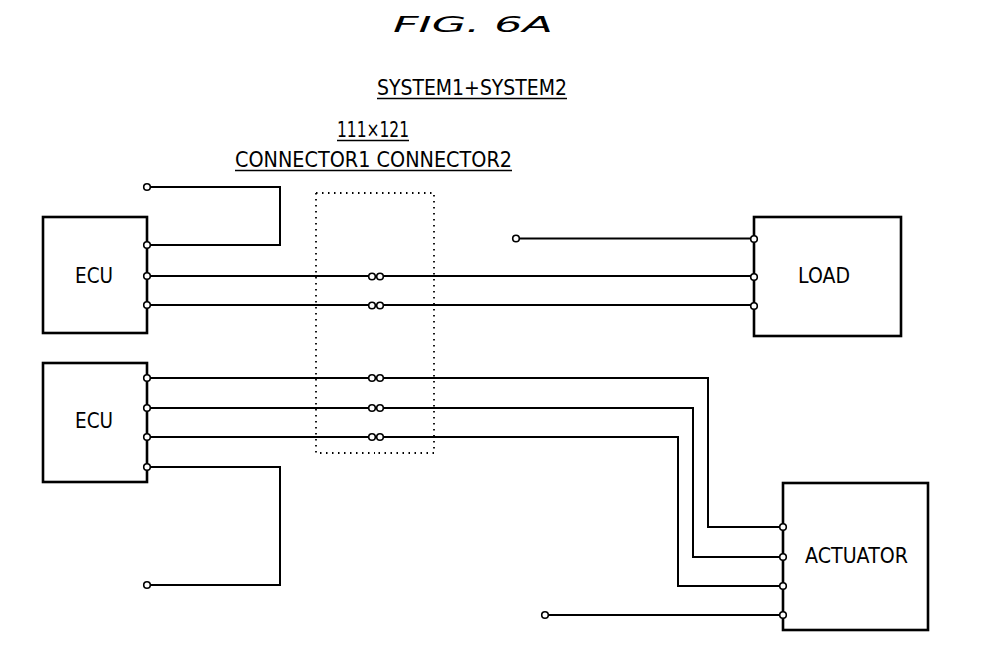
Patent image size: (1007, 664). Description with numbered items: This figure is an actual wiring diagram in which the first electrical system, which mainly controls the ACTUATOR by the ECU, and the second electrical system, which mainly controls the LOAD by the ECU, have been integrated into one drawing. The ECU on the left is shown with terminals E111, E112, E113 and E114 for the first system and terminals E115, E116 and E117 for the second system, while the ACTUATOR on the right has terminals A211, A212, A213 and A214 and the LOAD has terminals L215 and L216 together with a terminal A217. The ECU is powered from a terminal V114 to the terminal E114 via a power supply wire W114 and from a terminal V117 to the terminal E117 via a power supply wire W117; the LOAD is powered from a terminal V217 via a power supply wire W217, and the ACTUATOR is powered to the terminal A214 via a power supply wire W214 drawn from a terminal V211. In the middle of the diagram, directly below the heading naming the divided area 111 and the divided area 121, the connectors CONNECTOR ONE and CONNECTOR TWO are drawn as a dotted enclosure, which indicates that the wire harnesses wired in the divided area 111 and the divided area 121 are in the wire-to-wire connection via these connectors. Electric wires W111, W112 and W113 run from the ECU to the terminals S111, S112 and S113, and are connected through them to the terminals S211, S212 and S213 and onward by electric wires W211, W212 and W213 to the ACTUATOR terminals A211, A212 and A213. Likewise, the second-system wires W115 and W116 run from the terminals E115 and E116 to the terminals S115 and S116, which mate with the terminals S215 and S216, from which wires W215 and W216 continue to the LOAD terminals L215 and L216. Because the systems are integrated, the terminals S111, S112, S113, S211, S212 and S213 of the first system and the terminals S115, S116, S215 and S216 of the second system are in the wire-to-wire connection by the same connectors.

The divided area 111 is at (412, 453).
The divided area 121 is at (375, 323).
The terminal E111 is at (170, 367).
The terminal E112 is at (170, 397).
The terminal E113 is at (170, 426).
The terminal E114 is at (170, 456).
The terminal E115 is at (171, 295).
The terminal E116 is at (171, 265).
The terminal E117 is at (170, 235).
The electric wire W111 is at (259, 365).
The electric wire W112 is at (259, 395).
The electric wire W113 is at (259, 425).
The power supply wire W114 is at (240, 526).
The wire W115 is at (259, 294).
The wire W116 is at (259, 264).
The power supply wire W117 is at (213, 216).
The terminal S111 is at (348, 367).
The terminal S112 is at (348, 397).
The terminal S113 is at (348, 426).
The terminal S115 is at (348, 295).
The terminal S116 is at (348, 266).
The terminal S211 is at (402, 367).
The terminal S212 is at (402, 397).
The terminal S213 is at (402, 426).
The terminal S215 is at (402, 295).
The terminal S216 is at (402, 266).
The electric wire W211 is at (581, 440).
The electric wire W212 is at (581, 470).
The electric wire W213 is at (581, 499).
The power supply wire W214 is at (664, 602).
The wire W215 is at (567, 294).
The wire W216 is at (567, 264).
The power supply wire W217 is at (635, 226).
The terminal A211 is at (759, 516).
The terminal A212 is at (759, 546).
The terminal A213 is at (759, 575).
The terminal A214 is at (759, 604).
The load terminal A217 is at (727, 227).
The terminal L215 is at (728, 295).
The terminal L216 is at (728, 266).
The terminal V114 is at (169, 574).
The terminal V117 is at (170, 175).
The power supply terminal V211 is at (567, 605).
The terminal V217 is at (540, 227).